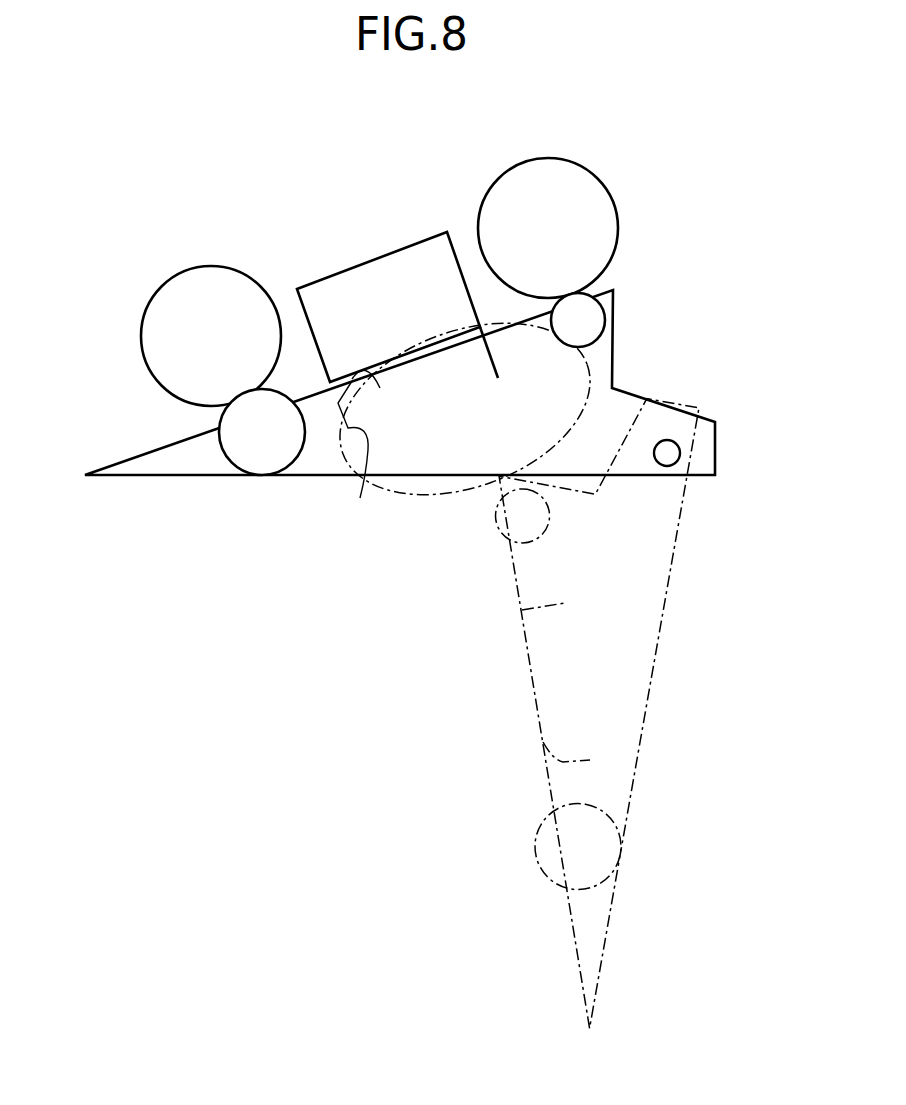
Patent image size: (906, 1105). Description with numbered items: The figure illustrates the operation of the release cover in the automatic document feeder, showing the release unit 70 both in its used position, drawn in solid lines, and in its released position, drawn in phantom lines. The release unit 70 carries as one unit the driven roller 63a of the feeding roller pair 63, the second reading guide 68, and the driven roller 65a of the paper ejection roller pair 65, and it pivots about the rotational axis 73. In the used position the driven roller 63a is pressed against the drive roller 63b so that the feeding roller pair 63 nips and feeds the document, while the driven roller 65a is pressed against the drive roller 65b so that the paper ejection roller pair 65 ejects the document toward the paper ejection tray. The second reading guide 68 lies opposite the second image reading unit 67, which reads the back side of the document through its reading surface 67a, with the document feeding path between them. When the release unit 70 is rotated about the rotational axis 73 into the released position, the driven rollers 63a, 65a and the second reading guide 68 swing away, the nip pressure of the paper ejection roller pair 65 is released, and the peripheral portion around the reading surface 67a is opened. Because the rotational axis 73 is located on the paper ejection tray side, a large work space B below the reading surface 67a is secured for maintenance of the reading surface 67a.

The feeding roller pair 63 is at (344, 575).
The driven roller 63a is at (263, 457).
The drive roller 63b is at (205, 277).
The paper ejection roller pair 65 is at (577, 347).
The driven roller 65a is at (594, 318).
The drive roller 65b is at (550, 167).
The second image reading unit 67 is at (393, 257).
The reading surface 67a is at (352, 378).
The second reading guide 68 is at (360, 498).
The release unit 70 is at (133, 498).
The rotational axis 73 is at (680, 453).
The work space B is at (422, 494).